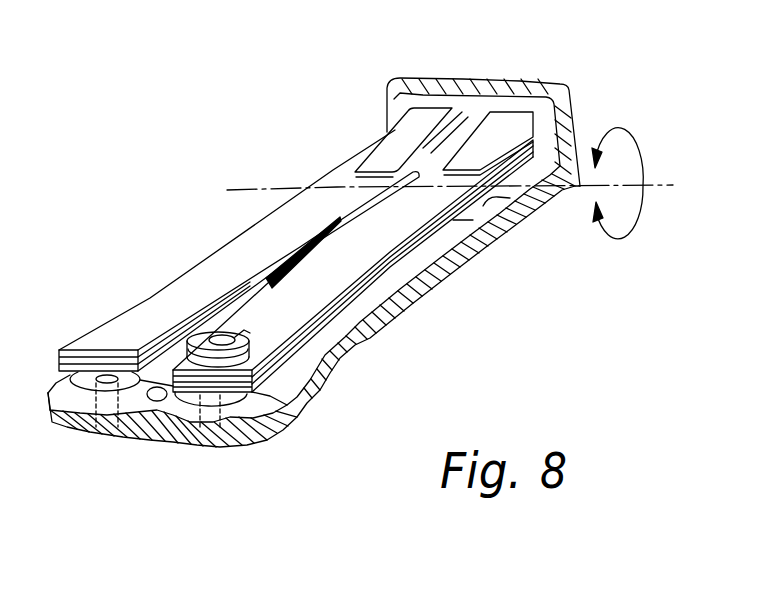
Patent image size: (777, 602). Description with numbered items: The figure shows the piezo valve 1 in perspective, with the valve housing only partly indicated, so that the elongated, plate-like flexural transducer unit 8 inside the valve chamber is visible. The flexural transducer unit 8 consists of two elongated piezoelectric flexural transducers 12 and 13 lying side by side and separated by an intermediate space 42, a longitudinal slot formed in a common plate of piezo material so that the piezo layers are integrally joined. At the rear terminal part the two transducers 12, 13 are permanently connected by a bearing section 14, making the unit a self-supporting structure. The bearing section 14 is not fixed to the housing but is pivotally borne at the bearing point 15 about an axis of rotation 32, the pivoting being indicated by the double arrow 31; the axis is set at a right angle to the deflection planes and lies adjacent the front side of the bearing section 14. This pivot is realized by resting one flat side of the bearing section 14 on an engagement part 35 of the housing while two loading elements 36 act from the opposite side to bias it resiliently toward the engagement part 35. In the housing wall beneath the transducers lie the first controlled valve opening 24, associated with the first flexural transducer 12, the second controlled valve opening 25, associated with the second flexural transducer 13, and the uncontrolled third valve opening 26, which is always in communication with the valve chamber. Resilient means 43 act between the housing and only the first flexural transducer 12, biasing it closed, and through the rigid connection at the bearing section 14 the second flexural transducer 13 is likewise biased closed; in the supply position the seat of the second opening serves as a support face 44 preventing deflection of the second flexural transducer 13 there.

The piezo valve 1 is at (298, 148).
The flexural transducer unit 8 is at (203, 287).
The first flexural transducer 12 is at (370, 240).
The second flexural transducer 13 is at (153, 310).
The bearing section 14 is at (433, 150).
The bearing point 15 is at (478, 210).
The first controlled valve opening 24 is at (230, 425).
The second controlled valve opening 25 is at (107, 381).
The third valve opening 26 is at (157, 401).
The double arrow 31 is at (614, 134).
The axis of rotation 32 is at (668, 183).
The engagement part 35 is at (500, 197).
The loading elements 36 is at (395, 138).
The intermediate space 42 is at (275, 270).
The resilient means 43 is at (267, 340).
The support face 44 is at (85, 378).